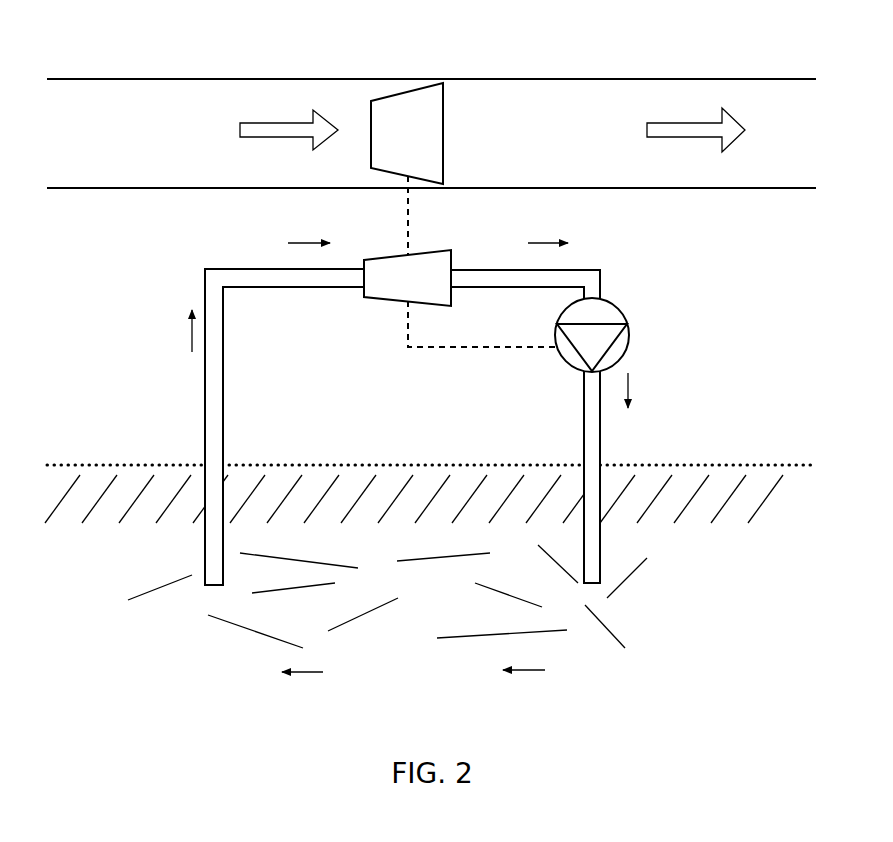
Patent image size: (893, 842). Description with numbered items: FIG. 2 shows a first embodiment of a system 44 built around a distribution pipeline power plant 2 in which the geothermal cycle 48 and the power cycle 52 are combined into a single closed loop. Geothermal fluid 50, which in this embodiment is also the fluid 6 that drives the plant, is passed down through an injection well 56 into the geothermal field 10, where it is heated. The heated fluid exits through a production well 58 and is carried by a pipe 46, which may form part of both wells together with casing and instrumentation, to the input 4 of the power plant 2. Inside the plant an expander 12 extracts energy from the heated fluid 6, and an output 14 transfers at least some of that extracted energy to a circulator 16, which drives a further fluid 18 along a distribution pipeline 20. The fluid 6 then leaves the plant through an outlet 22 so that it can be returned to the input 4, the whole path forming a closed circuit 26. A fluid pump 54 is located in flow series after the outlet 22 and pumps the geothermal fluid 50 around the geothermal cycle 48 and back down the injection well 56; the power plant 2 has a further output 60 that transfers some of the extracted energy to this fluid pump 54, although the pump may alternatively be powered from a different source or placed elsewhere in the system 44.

The distribution pipeline power plant 2 is at (688, 262).
The input 4 is at (328, 287).
The fluid 6 is at (228, 269).
The geothermal field 10 is at (390, 650).
The expander 12 is at (388, 300).
The output 14 is at (408, 225).
The circulator 16 is at (443, 132).
The further fluid 18 is at (240, 128).
The distribution pipeline 20 is at (585, 79).
The outlet 22 is at (465, 270).
The closed circuit 26 is at (700, 405).
The system 44 is at (128, 247).
The pipe 46 is at (584, 413).
The geothermal cycle 48 is at (110, 556).
The geothermal fluid 50 is at (627, 607).
The power cycle 52 is at (110, 368).
The fluid pump 54 is at (616, 310).
The injection well 56 is at (602, 462).
The production well 58 is at (205, 466).
The further output 60 is at (410, 302).